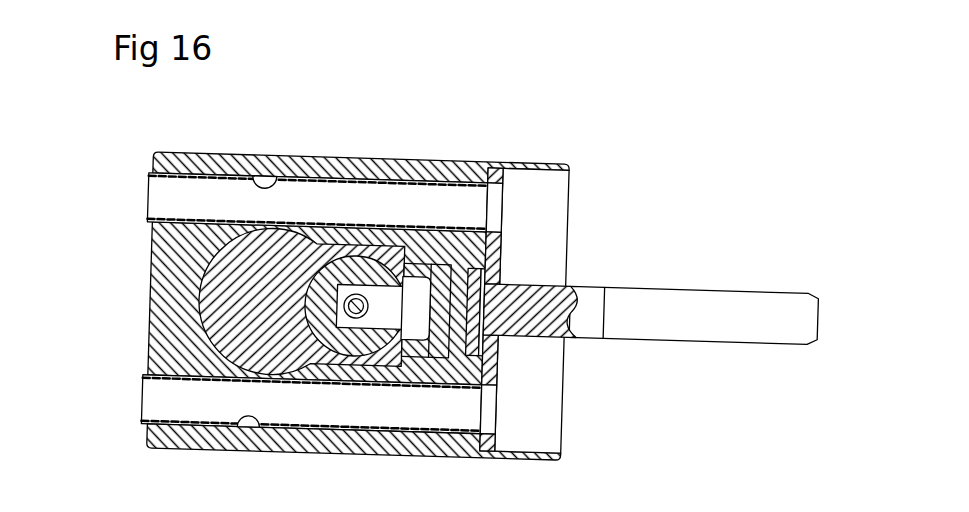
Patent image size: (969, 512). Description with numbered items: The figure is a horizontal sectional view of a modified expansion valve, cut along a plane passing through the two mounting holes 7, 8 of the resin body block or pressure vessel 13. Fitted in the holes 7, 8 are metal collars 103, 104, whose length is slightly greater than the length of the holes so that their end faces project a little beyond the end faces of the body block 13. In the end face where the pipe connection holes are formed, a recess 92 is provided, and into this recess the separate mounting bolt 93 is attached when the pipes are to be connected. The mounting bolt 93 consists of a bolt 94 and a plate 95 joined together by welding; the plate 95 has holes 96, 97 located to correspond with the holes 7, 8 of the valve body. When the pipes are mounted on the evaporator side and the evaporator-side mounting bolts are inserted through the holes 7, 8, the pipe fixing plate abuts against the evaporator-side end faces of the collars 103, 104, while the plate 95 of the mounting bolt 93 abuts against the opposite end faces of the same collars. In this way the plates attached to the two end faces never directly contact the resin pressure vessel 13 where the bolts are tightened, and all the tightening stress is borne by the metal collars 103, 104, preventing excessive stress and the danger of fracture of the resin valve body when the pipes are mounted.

The hole 7 is at (250, 175).
The hole 8 is at (268, 435).
The body block or pressure vessel 13 is at (337, 153).
The recess 92 is at (553, 387).
The mounting bolt 93 is at (651, 269).
The bolt 94 is at (648, 290).
The plate 95 is at (502, 265).
The hole 96 is at (490, 416).
The hole 97 is at (495, 210).
The metal collar 103 is at (150, 192).
The metal collar 104 is at (143, 403).